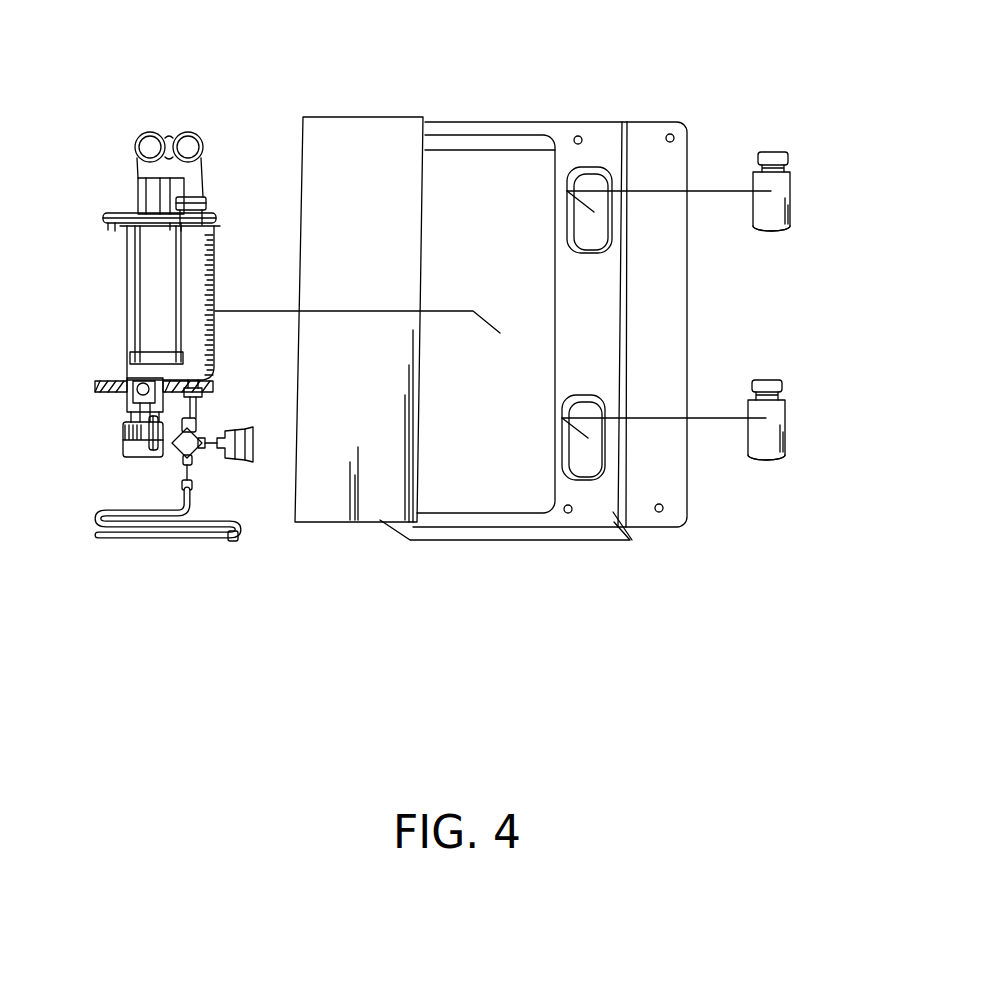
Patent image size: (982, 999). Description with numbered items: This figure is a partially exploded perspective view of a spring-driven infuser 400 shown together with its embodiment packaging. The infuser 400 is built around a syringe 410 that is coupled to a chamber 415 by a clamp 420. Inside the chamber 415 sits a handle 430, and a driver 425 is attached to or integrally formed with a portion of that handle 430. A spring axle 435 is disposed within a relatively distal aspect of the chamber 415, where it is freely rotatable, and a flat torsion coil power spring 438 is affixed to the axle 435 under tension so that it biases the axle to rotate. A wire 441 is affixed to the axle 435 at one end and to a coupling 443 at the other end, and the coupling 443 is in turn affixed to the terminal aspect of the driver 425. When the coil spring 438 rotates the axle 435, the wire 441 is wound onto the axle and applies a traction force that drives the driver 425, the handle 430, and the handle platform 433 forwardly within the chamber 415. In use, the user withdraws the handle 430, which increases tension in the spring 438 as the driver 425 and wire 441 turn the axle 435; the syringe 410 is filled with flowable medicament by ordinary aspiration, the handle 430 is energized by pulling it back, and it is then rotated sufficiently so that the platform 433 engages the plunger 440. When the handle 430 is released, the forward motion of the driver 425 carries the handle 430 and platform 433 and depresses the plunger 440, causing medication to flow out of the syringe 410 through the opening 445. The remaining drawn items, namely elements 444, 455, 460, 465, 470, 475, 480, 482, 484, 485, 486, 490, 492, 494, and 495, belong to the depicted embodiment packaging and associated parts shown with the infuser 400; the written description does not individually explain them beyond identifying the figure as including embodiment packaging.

The infuser 400 is at (156, 106).
The syringe 410 is at (184, 275).
The chamber 415 is at (155, 435).
The clamp 420 is at (115, 215).
The driver 425 is at (143, 352).
The handle 430 is at (190, 130).
The handle platform 433 is at (192, 198).
The spring axle 435 is at (126, 438).
The flat torsion coil power spring 438 is at (147, 452).
The plunger 440 is at (212, 200).
The wire 441 is at (133, 412).
The coupling 443 is at (139, 392).
The bottom flange 444 is at (490, 537).
The opening 445 is at (195, 392).
The connector 455 is at (253, 455).
The three-way valve 460 is at (247, 448).
The fold lines 465 is at (296, 522).
The tubing 470 is at (160, 542).
The tray assembly 475 is at (540, 101).
The back panel 480 is at (603, 127).
The fold 482 is at (618, 520).
The mounting hole 484 is at (570, 513).
The side box 485 is at (345, 128).
The mounting hole 486 is at (662, 512).
The bottom edge 490 is at (508, 530).
The vials 492 is at (788, 231).
The vial slots 494 is at (594, 413).
The pocket 495 is at (463, 173).